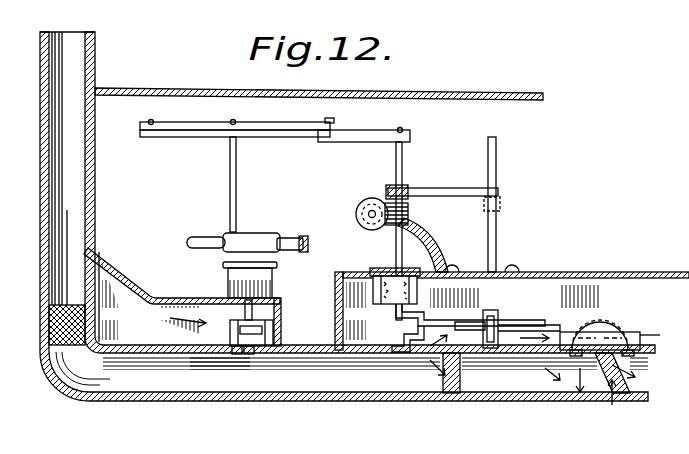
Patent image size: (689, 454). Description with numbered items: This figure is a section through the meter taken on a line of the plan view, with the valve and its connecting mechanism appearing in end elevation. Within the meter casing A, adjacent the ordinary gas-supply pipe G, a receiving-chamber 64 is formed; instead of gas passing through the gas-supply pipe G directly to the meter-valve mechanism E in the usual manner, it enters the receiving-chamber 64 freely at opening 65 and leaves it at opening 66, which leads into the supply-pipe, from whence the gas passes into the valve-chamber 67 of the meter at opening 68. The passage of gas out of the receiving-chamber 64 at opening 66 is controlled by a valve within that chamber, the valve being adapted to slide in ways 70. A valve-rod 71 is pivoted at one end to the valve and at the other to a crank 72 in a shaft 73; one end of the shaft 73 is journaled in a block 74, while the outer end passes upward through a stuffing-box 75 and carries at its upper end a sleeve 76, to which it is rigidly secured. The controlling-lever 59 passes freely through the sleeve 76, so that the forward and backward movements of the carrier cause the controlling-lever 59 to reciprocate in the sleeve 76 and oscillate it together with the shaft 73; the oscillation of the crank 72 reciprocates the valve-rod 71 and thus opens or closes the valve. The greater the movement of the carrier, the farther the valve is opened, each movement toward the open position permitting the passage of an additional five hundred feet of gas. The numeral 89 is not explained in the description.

The controlling-lever 59 is at (298, 242).
The receiving-chamber 64 is at (151, 301).
The opening 65 is at (92, 265).
The opening 66 is at (236, 356).
The valve-chamber 67 is at (512, 307).
The opening 68 is at (476, 328).
The ways 70 is at (272, 343).
The valve-rod 71 is at (262, 330).
The crank 72 is at (220, 373).
The shaft 73 is at (253, 312).
The block 74 is at (247, 354).
The stuffing-box 75 is at (278, 280).
The sleeve 76 is at (252, 236).
The inlet 89 is at (199, 315).
The gas-supply pipe G is at (118, 51).
The casing A is at (436, 108).
The meter-valve mechanism E is at (435, 167).